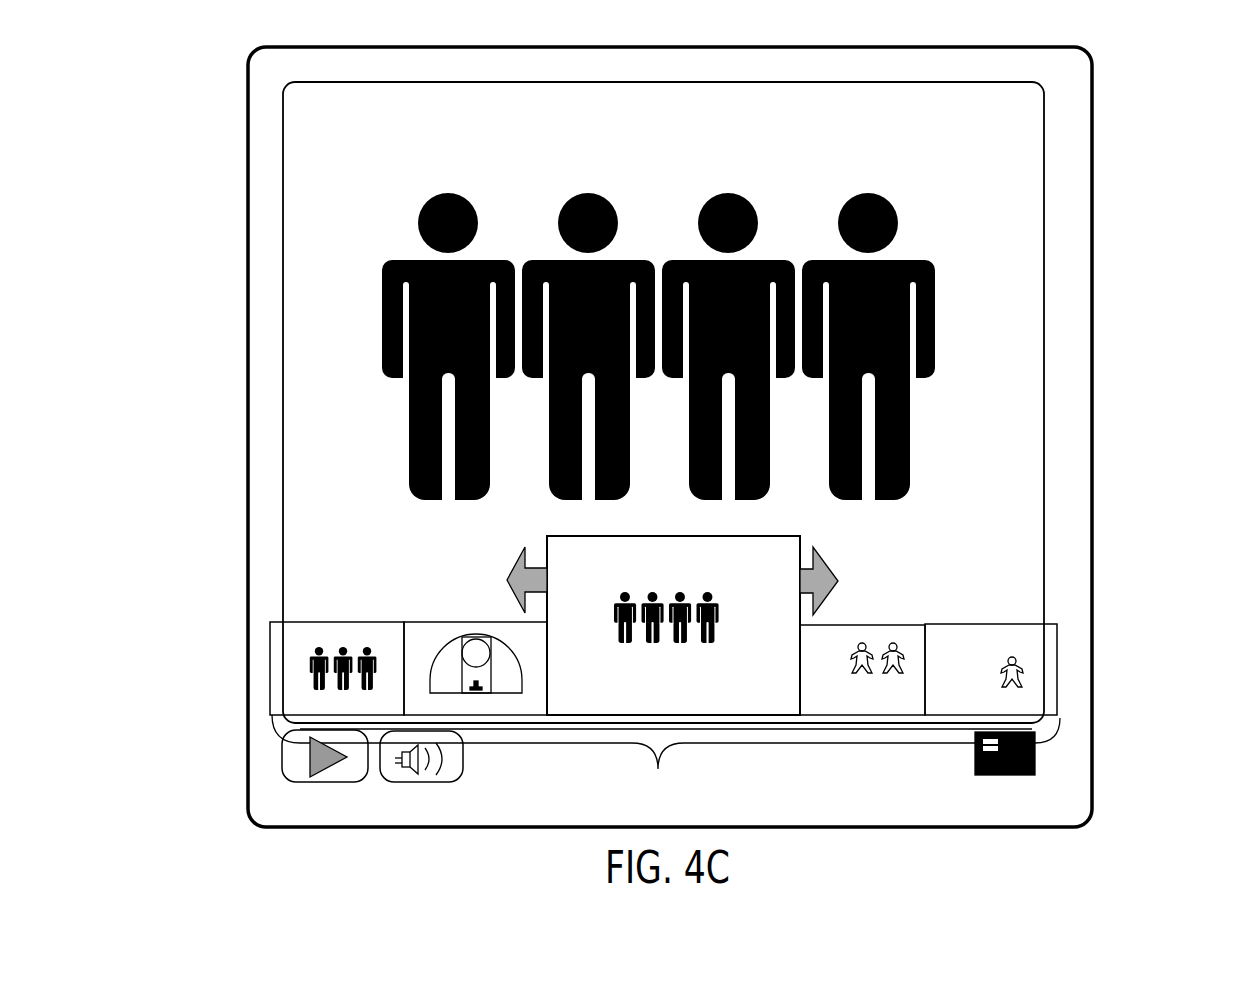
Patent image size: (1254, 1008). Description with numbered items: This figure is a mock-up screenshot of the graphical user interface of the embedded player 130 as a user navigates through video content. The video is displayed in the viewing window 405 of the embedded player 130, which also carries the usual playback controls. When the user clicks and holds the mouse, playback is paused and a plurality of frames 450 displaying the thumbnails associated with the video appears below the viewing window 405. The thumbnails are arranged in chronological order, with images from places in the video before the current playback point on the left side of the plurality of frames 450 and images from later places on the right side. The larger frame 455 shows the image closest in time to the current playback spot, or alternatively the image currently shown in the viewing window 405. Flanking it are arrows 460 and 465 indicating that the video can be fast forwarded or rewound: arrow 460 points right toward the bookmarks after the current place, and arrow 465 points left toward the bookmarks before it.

The embedded player 130 is at (298, 78).
The viewing window 405 is at (340, 267).
The plurality of frames 450 is at (658, 769).
The larger frame 455 is at (785, 536).
The arrow 460 is at (840, 580).
The arrow 465 is at (507, 578).